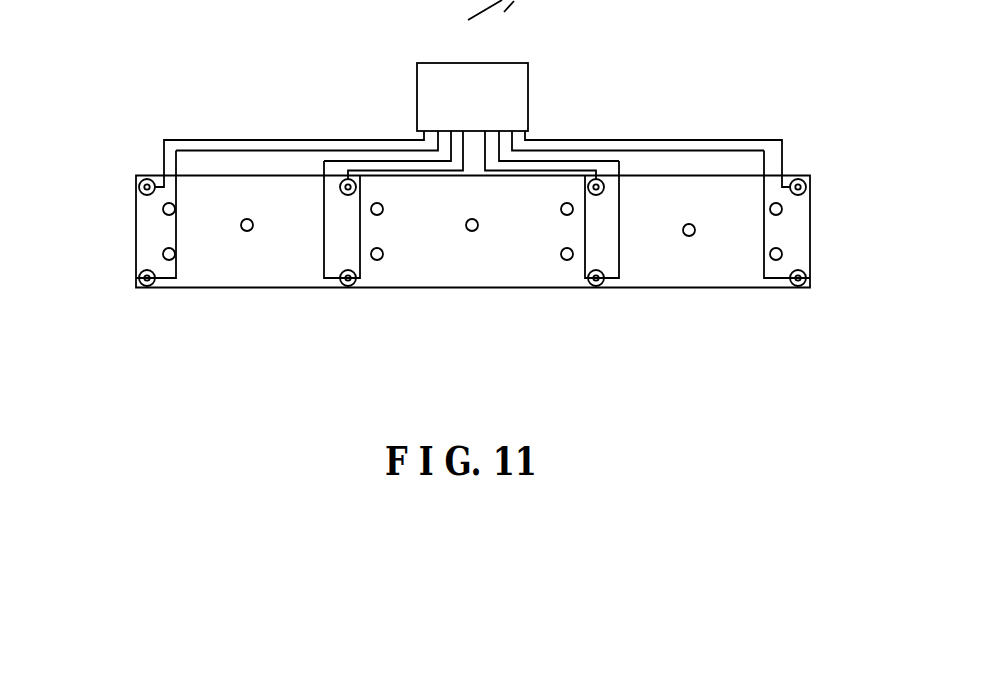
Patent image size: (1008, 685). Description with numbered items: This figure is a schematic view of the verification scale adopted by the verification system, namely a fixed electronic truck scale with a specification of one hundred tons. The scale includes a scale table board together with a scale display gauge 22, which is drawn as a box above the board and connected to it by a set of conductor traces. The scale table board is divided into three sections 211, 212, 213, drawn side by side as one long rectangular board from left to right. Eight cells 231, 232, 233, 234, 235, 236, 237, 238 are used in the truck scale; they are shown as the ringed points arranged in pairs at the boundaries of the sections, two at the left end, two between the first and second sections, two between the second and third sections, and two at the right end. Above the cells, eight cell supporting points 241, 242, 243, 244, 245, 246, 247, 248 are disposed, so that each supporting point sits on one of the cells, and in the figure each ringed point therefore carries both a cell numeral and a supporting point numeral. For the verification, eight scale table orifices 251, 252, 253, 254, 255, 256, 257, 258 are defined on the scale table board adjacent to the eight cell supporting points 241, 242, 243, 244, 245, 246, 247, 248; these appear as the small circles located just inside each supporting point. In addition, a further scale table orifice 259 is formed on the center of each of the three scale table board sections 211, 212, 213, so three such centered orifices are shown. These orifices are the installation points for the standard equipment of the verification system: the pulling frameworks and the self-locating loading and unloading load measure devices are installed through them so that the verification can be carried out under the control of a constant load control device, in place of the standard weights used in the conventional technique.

The scale display gauge 22 is at (510, 92).
The scale table board section 211 is at (207, 272).
The scale table board section 212 is at (523, 277).
The scale table board section 213 is at (728, 267).
The cell 231 is at (138, 279).
The cell 232 is at (138, 185).
The cell 233 is at (346, 181).
The cell 234 is at (592, 181).
The cell 235 is at (797, 178).
The cell 236 is at (802, 270).
The cell 237 is at (602, 283).
The cell 238 is at (355, 284).
The cell supporting point 241 is at (143, 286).
The cell supporting point 242 is at (141, 195).
The cell supporting point 243 is at (345, 183).
The cell supporting point 244 is at (600, 182).
The cell supporting point 245 is at (805, 182).
The cell supporting point 246 is at (808, 278).
The cell supporting point 247 is at (596, 285).
The cell supporting point 248 is at (345, 284).
The scale table orifice 251 is at (167, 261).
The scale table orifice 252 is at (174, 207).
The scale table orifice 253 is at (378, 203).
The scale table orifice 254 is at (574, 209).
The scale table orifice 255 is at (782, 209).
The scale table orifice 256 is at (777, 260).
The scale table orifice 257 is at (566, 260).
The scale table orifice 258 is at (381, 259).
The scale table orifice 259 is at (248, 231).